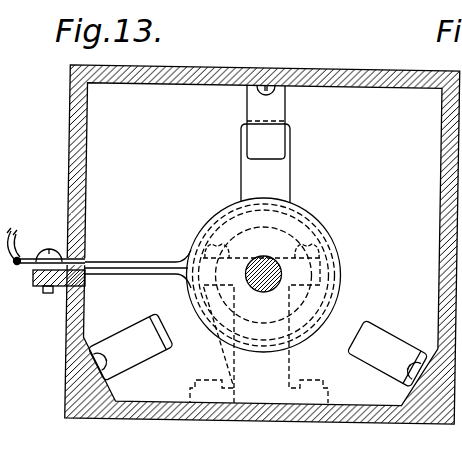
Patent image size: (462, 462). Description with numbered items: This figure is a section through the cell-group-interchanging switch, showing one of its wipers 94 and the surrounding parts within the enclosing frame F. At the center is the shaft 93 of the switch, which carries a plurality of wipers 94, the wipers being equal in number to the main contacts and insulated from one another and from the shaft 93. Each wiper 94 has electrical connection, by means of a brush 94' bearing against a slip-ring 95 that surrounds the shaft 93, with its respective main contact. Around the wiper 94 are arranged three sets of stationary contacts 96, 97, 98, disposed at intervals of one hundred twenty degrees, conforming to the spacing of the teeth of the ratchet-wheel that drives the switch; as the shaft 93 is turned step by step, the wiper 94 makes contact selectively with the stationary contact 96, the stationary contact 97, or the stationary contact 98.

The casing / frame F is at (320, 44).
The shaft 93 is at (264, 256).
The wiper 94 is at (289, 163).
The brush 94' is at (99, 260).
The slip-ring 95 is at (312, 233).
The stationary contact 96 is at (253, 113).
The stationary contact 97 is at (128, 329).
The stationary contact 98 is at (379, 338).